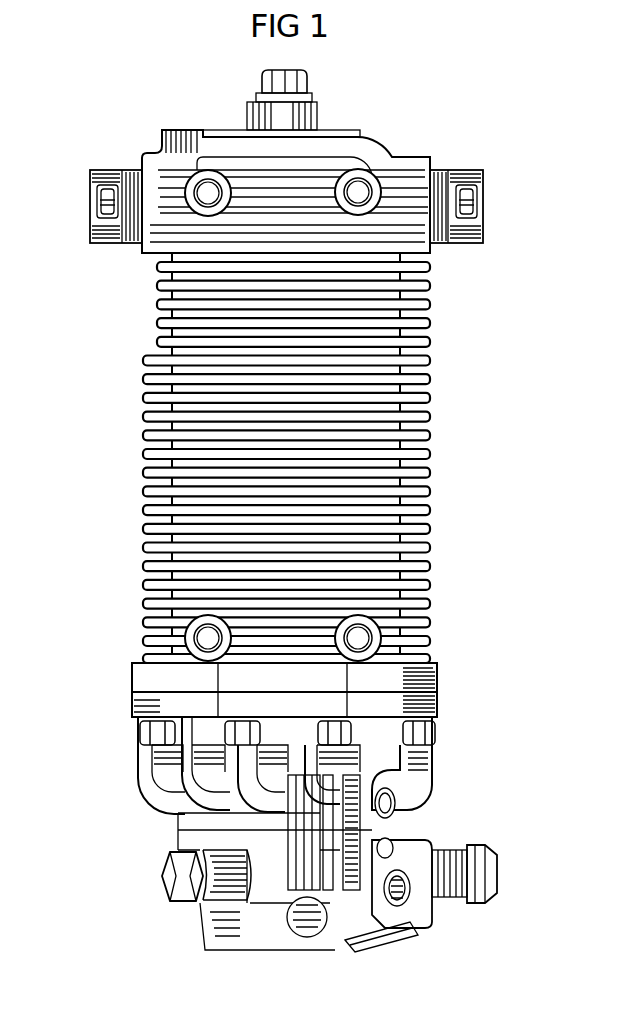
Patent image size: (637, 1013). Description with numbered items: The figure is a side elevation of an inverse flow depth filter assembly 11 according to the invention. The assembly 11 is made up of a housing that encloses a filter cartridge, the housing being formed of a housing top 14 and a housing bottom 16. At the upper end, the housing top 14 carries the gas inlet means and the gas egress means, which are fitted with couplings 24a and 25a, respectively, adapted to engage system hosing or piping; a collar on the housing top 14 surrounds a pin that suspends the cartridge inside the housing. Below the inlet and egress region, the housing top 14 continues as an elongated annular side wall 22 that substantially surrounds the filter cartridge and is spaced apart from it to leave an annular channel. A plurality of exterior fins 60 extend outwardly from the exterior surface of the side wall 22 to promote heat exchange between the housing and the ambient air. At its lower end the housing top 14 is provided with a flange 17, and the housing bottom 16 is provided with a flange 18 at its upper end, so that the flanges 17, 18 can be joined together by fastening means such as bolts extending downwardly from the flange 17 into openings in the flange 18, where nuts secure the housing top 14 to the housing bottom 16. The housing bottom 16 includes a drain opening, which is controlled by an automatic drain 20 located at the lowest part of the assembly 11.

The inverse flow depth filter assembly 11 is at (150, 137).
The housing top 14 is at (330, 130).
The coupling 24a is at (92, 222).
The coupling 25a is at (482, 210).
The side wall 22 is at (403, 313).
The exterior fins 60 is at (157, 323).
The flange 17 is at (438, 675).
The flange 18 is at (438, 708).
The housing bottom 16 is at (137, 792).
The automatic drain 20 is at (202, 935).